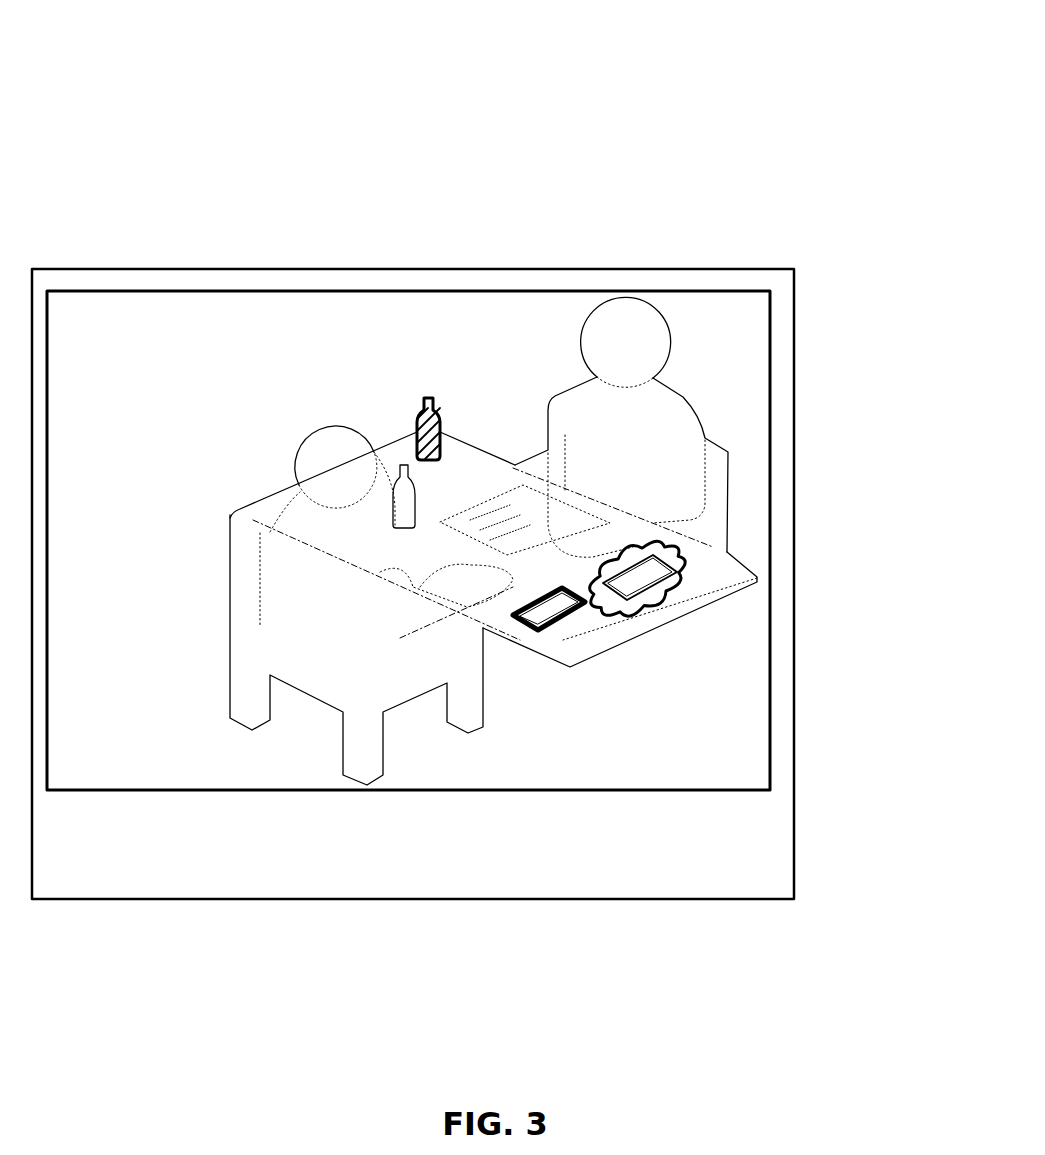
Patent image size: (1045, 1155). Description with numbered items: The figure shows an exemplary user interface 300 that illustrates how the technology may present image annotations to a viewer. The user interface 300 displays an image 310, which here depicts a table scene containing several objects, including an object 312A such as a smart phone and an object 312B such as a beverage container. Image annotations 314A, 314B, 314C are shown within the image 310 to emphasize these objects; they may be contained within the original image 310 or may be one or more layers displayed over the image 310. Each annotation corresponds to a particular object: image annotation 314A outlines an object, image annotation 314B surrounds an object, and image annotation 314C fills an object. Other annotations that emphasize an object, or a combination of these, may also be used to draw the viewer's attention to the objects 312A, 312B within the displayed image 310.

The user interface 300 is at (818, 102).
The image 310 is at (410, 792).
The object 312A is at (677, 567).
The object 312B is at (428, 398).
The image annotation 314A is at (565, 620).
The image annotation 314B is at (658, 591).
The image annotation 314C is at (419, 433).